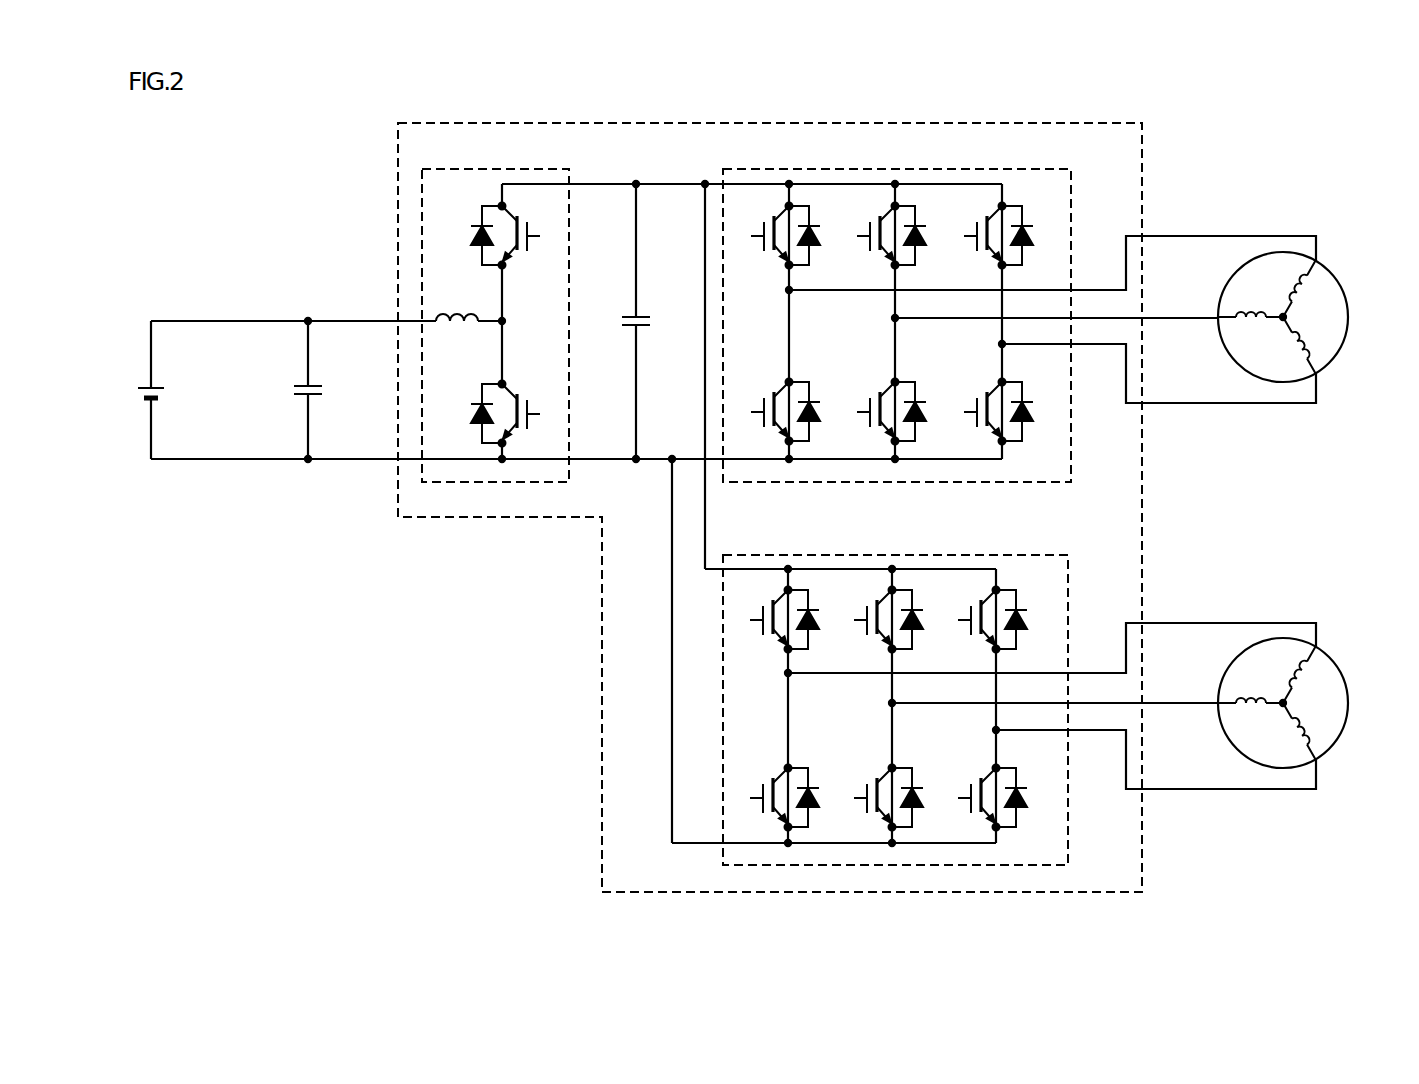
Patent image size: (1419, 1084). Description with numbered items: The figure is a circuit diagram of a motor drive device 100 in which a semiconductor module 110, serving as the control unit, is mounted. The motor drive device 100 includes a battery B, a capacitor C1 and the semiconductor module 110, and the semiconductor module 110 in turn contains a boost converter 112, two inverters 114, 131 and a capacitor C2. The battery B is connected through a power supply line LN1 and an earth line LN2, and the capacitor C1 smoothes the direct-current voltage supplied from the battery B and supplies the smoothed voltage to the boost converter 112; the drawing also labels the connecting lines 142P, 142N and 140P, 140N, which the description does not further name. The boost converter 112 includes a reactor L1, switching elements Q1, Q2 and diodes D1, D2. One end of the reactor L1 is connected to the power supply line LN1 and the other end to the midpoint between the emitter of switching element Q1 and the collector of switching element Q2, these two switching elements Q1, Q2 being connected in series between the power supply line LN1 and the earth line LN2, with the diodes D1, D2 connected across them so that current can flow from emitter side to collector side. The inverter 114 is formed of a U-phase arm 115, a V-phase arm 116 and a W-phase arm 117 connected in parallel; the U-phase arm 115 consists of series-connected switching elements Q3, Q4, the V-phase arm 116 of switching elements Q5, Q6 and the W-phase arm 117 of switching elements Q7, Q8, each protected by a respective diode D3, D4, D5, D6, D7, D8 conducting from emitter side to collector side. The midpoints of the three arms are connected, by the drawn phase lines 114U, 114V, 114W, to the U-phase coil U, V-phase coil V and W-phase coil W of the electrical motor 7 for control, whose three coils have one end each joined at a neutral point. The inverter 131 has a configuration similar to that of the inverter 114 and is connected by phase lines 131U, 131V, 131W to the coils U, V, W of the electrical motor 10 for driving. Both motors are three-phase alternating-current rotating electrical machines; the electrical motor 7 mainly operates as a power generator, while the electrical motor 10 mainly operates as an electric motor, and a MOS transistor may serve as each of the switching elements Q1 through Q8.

The motor drive device 100 is at (1256, 155).
The semiconductor module 110 is at (1105, 893).
The boost converter 112 is at (569, 210).
The inverter 114 is at (1071, 193).
The inverter 131 is at (1068, 587).
The U-phase arm 115 is at (782, 309).
The V-phase arm 116 is at (890, 337).
The W-phase arm 117 is at (995, 362).
The positive bus 140P is at (671, 182).
The negative bus 140N is at (612, 462).
The positive power line 142P is at (343, 318).
The negative power line 142N is at (347, 463).
The power supply line LN1 is at (233, 318).
The earth line LN2 is at (232, 463).
The battery B is at (165, 393).
The capacitor C1 is at (318, 398).
The capacitor C2 is at (646, 328).
The reactor L1 is at (470, 302).
The switching element Q1 is at (529, 236).
The switching element Q2 is at (529, 416).
The switching element Q3 is at (760, 428).
The switching element Q4 is at (760, 605).
The switching element Q5 is at (866, 428).
The switching element Q6 is at (866, 605).
The switching element Q7 is at (973, 428).
The switching element Q8 is at (973, 605).
The diode D1 is at (471, 231).
The diode D2 is at (471, 408).
The diode D3 is at (818, 433).
The diode D4 is at (818, 610).
The diode D5 is at (923, 433).
The diode D6 is at (923, 610).
The diode D7 is at (1028, 433).
The diode D8 is at (1029, 610).
The U-phase line of first inverter 114U is at (1177, 234).
The V-phase line of first inverter 114V is at (1177, 315).
The W-phase line of first inverter 114W is at (1177, 400).
The U-phase line of second inverter 131U is at (1177, 620).
The V-phase line of second inverter 131V is at (1177, 700).
The W-phase line of second inverter 131W is at (1177, 786).
The electrical motor for control 7 is at (1340, 284).
The electrical motor for driving 10 is at (1340, 671).
The U-phase coil U is at (1291, 480).
The V-phase coil V is at (1250, 526).
The W-phase coil W is at (1311, 537).